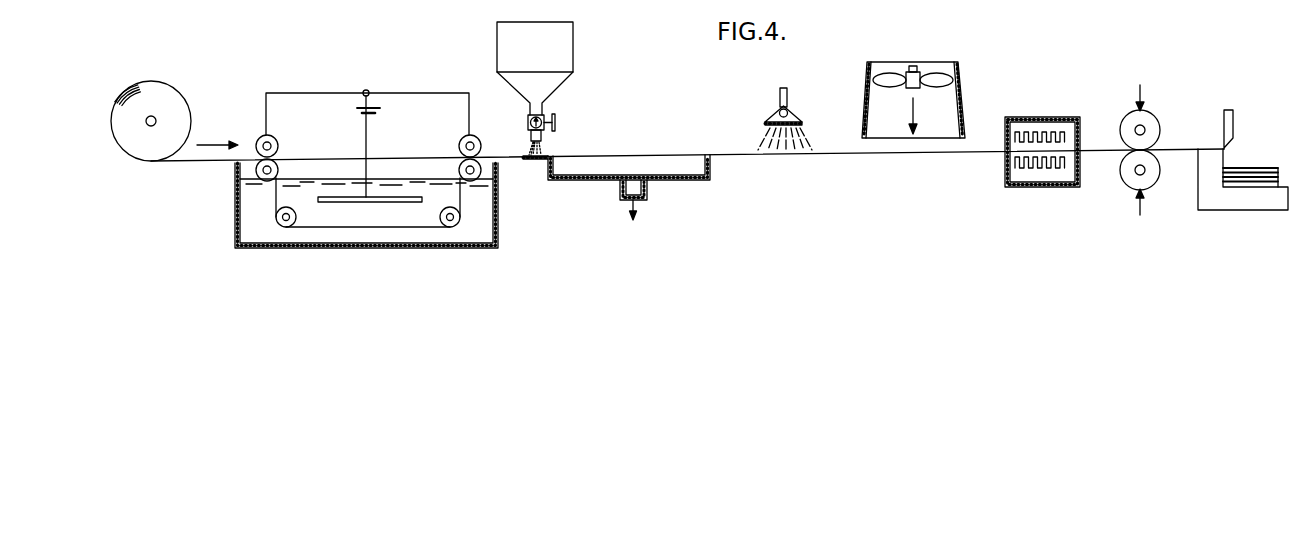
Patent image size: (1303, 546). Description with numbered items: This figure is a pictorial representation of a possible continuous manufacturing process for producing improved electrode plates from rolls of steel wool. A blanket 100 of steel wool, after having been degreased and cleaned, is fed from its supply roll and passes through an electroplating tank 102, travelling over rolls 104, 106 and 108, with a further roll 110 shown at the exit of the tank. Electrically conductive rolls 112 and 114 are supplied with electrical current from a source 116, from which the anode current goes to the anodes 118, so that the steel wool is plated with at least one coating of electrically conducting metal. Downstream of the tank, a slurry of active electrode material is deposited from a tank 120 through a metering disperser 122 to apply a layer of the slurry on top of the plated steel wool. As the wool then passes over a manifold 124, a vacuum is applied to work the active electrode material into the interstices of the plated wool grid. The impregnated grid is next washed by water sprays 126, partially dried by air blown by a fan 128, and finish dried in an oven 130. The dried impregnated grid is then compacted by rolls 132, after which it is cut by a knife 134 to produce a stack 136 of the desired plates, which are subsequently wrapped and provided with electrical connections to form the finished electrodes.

The blanket of steel wool 100 is at (140, 162).
The electroplating tank 102 is at (236, 218).
The roll 104 is at (278, 164).
The roll 106 is at (276, 215).
The roll 108 is at (460, 215).
The lower exit roller 110 is at (459, 160).
The electrically conductive roll 112 is at (258, 137).
The electrically conductive roll 114 is at (462, 140).
The source 116 is at (357, 110).
The anodes 118 is at (393, 203).
The tank 120 is at (573, 56).
The metering disperser 122 is at (556, 120).
The manifold 124 is at (692, 182).
The water sprays 126 is at (776, 113).
The fan 128 is at (867, 70).
The oven 130 is at (1050, 116).
The rolls 132 is at (1127, 117).
The knife 134 is at (1224, 122).
The stack 136 is at (1250, 166).